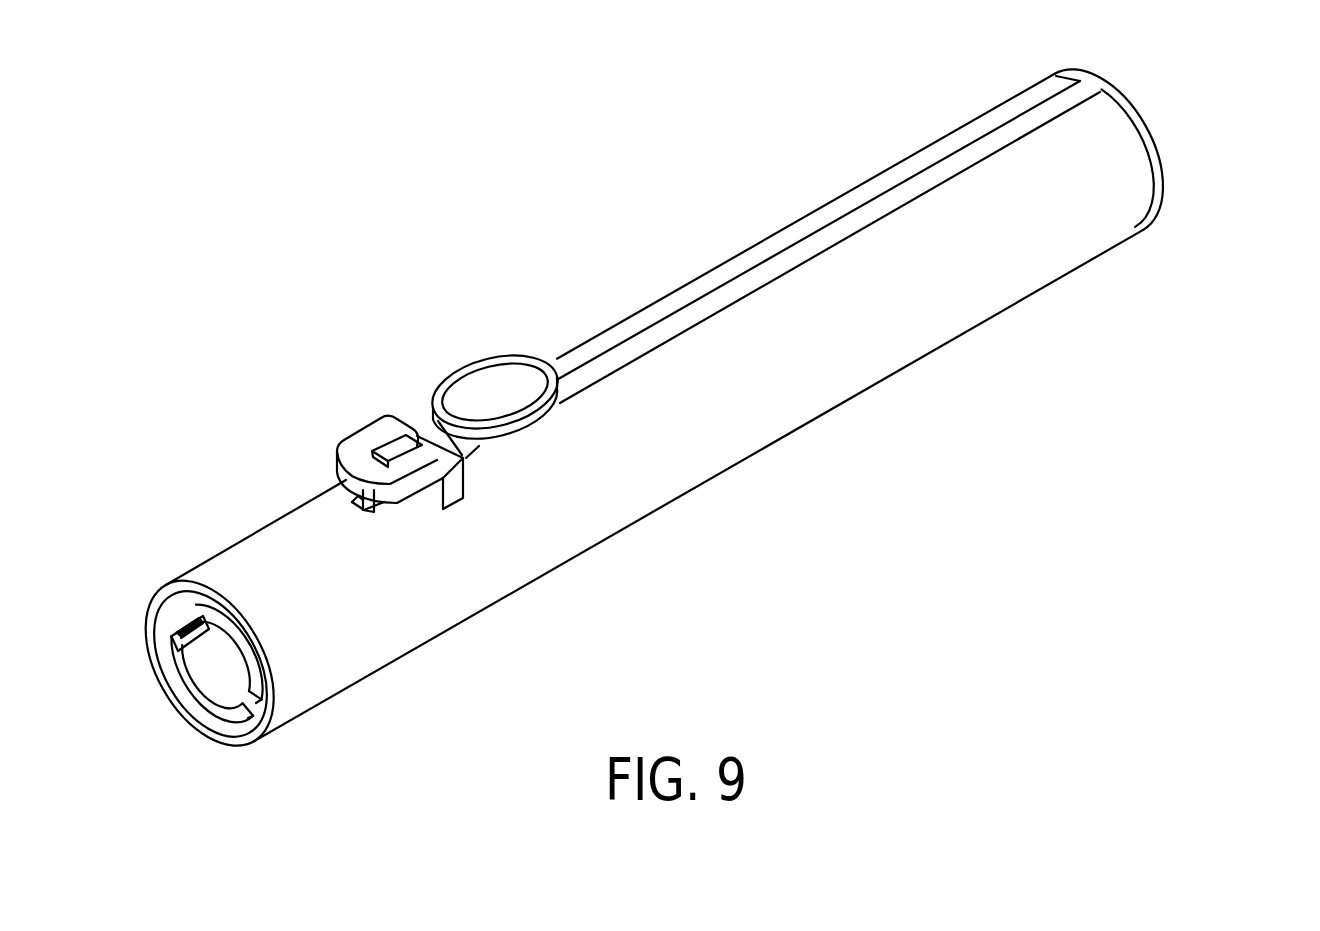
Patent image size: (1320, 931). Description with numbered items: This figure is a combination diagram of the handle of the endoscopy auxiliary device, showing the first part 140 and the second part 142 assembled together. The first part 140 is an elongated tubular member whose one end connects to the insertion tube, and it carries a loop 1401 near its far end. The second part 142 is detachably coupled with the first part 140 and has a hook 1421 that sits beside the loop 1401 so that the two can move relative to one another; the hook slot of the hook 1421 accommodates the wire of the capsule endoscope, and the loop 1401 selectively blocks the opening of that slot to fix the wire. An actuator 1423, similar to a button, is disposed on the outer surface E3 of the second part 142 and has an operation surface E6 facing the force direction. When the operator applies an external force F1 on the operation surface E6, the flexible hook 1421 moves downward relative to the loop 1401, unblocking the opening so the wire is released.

The first part 140 is at (450, 628).
The second part 142 is at (1155, 138).
The loop 1401 is at (367, 440).
The hook 1421 is at (361, 508).
The actuator 1423 is at (530, 372).
The outer surface E3 is at (598, 372).
The operation surface E6 is at (497, 398).
The external force F1 is at (469, 402).